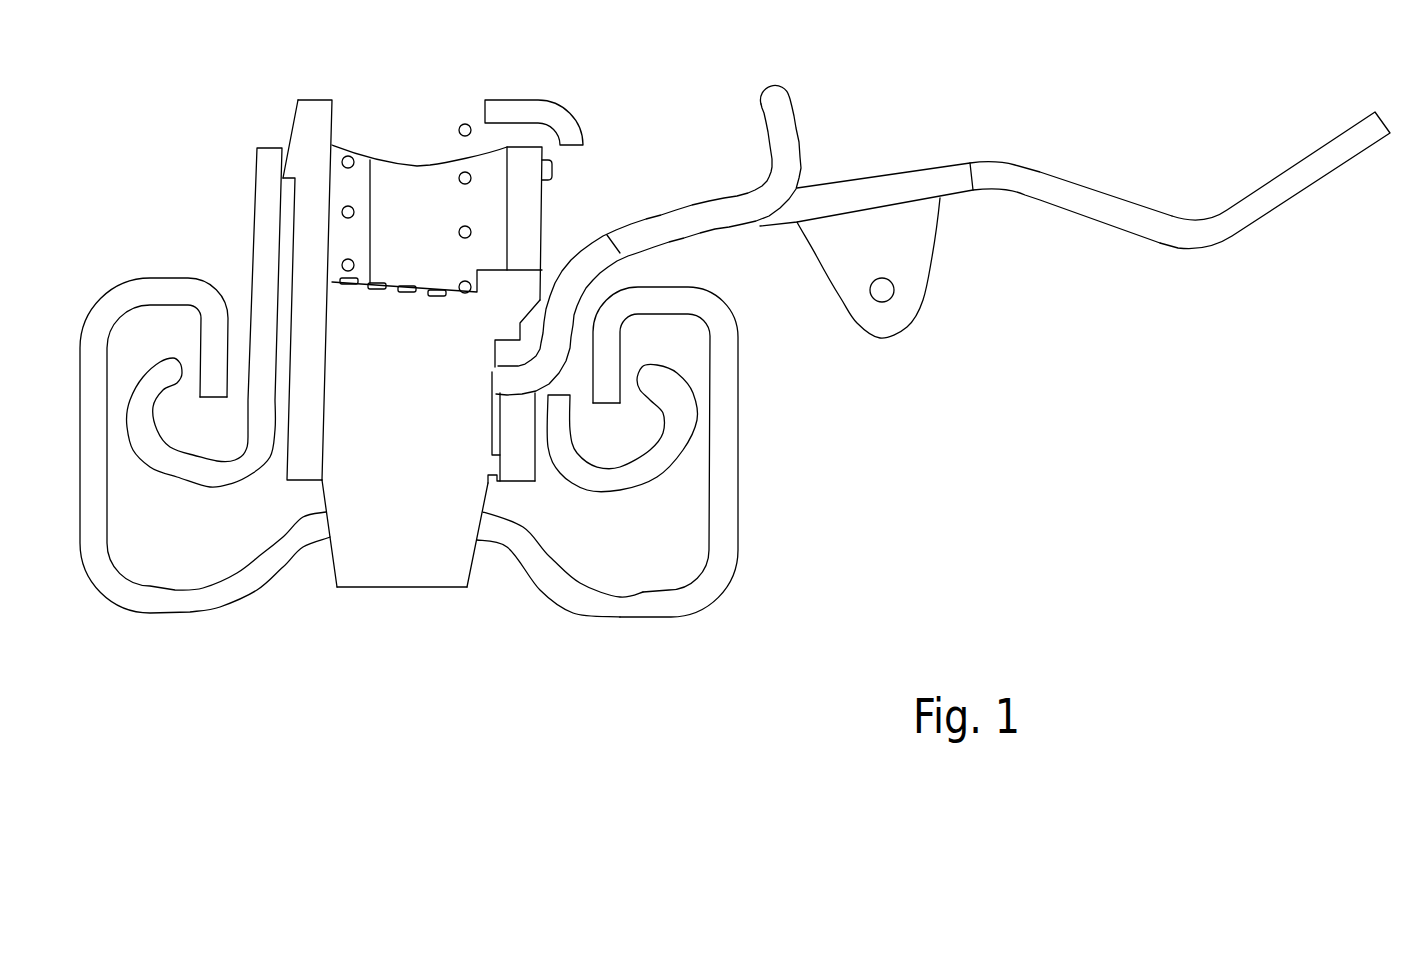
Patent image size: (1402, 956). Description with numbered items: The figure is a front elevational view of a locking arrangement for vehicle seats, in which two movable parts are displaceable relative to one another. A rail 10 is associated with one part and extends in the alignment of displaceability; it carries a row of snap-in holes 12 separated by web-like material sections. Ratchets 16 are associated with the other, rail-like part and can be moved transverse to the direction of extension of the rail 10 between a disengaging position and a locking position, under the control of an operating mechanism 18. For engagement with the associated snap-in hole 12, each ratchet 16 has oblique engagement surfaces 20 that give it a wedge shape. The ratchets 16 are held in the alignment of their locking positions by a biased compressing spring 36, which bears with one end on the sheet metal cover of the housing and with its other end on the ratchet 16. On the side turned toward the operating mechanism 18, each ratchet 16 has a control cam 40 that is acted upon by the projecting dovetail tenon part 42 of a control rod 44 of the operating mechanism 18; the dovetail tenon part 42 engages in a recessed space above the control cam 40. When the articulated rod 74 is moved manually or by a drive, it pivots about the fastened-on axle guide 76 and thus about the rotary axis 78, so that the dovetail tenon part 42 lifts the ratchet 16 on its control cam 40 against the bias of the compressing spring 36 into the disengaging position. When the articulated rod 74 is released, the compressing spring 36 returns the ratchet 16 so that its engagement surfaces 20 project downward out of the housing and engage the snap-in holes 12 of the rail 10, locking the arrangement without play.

The rail 10 is at (477, 498).
The snap-in hole 12 is at (482, 525).
The ratchet 16 is at (373, 605).
The operating mechanism 18 is at (1075, 242).
The engagement surface 20 is at (328, 563).
The compressing spring 36 is at (352, 157).
The control cam 40 is at (648, 240).
The dovetail tenon part 42 is at (508, 377).
The control rod 44 is at (583, 268).
The articulated rod 74 is at (1242, 215).
The axle guide 76 is at (922, 325).
The rotary axis 78 is at (878, 290).